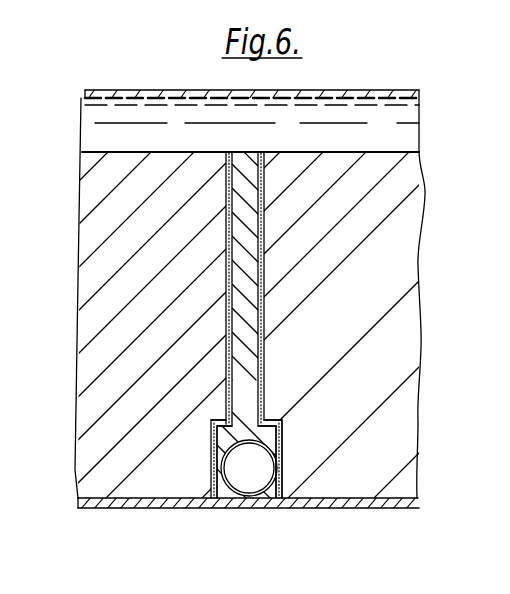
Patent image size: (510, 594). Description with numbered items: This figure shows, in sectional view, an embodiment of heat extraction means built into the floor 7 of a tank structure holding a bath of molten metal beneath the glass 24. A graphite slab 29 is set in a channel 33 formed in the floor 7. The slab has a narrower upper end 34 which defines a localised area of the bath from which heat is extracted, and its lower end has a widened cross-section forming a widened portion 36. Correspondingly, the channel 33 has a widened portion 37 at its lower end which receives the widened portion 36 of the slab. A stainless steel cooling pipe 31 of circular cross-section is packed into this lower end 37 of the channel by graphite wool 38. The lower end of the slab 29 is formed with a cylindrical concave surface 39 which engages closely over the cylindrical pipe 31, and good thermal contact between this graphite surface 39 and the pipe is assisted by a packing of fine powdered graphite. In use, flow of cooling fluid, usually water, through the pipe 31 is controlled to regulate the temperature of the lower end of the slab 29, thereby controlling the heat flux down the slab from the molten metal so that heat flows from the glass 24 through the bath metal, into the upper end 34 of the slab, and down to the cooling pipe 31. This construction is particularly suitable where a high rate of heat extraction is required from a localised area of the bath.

The floor 7 is at (108, 277).
The glass 24 is at (375, 96).
The graphite slab 29 is at (242, 249).
The cooling pipe 31 is at (222, 499).
The channel 33 is at (262, 352).
The narrower upper end 34 is at (236, 153).
The widened portion 36 is at (283, 430).
The widened portion of channel 37 is at (246, 497).
The graphite wool 38 is at (276, 499).
The cylindrical concave surface 39 is at (220, 452).